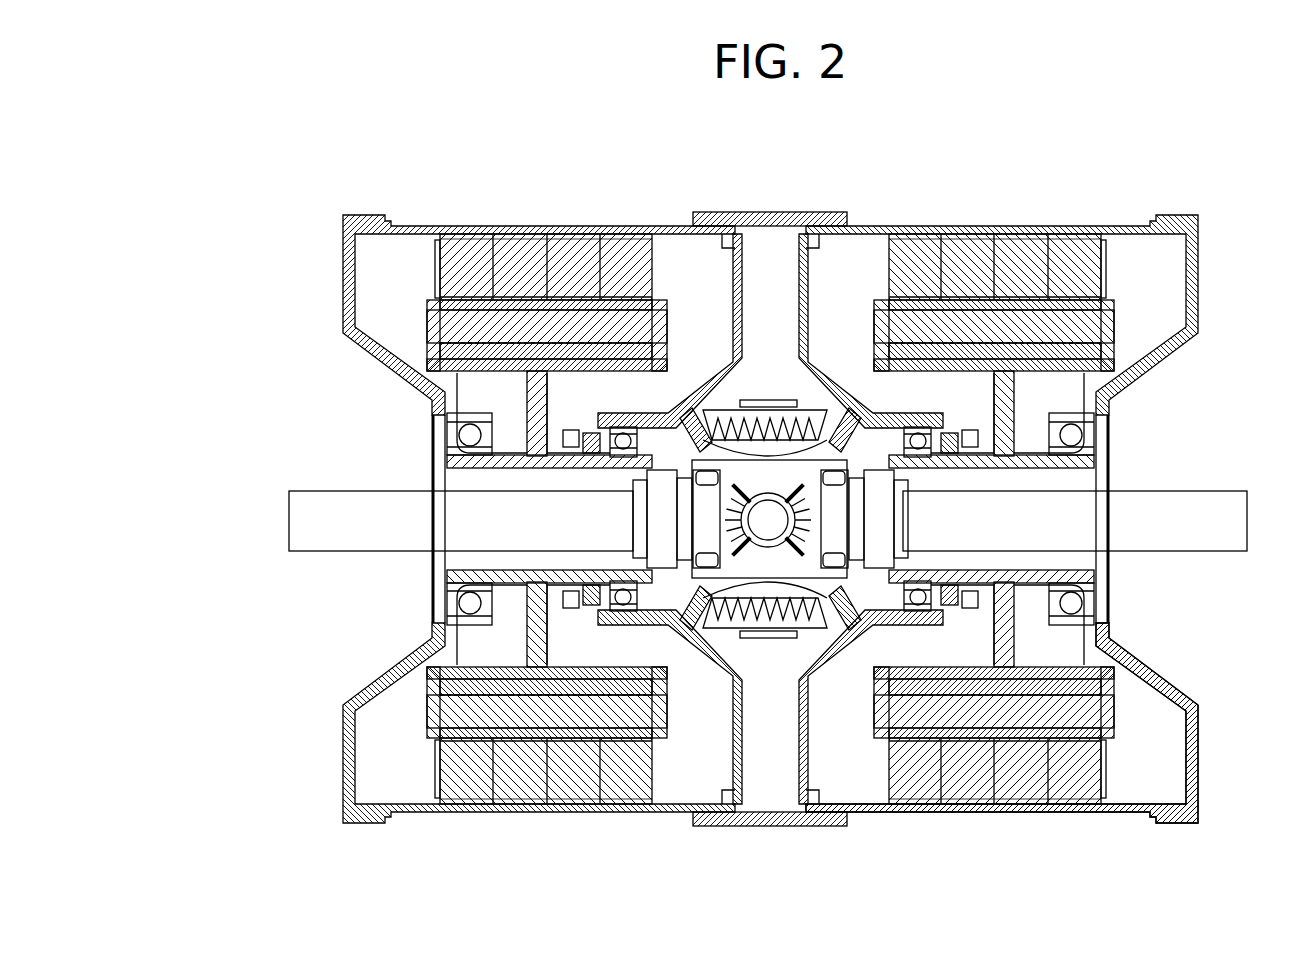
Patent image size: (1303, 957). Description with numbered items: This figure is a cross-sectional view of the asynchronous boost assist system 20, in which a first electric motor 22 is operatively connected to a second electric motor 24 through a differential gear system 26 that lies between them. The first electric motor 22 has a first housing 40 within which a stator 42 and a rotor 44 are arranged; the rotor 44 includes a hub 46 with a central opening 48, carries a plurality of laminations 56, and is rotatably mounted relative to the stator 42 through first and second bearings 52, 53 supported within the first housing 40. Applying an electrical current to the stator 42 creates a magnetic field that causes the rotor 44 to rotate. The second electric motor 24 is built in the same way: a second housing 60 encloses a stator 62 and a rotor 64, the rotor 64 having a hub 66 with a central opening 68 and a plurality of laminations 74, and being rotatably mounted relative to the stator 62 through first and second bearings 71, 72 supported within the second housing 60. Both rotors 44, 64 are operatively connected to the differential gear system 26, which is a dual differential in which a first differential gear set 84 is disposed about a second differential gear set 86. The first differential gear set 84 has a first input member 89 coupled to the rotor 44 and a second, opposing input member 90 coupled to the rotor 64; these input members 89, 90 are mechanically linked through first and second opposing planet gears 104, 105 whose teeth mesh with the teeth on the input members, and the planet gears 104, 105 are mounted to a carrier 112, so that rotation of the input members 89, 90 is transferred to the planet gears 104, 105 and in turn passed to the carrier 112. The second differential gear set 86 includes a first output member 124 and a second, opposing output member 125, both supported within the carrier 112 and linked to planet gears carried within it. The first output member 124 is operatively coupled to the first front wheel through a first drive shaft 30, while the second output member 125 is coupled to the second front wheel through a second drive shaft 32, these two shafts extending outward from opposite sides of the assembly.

The asynchronous boost assist system 20 is at (268, 229).
The first electric motor 22 is at (417, 216).
The second electric motor 24 is at (1182, 184).
The differential gear system 26 is at (777, 189).
The first drive shaft 30 is at (306, 555).
The second drive shaft 32 is at (1228, 555).
The first housing 40 is at (565, 226).
The stator 42 is at (520, 238).
The rotor 44 is at (490, 391).
The hub 46 is at (440, 652).
The central opening 48 is at (455, 470).
The first bearing 52 is at (462, 433).
The second bearing 53 is at (605, 596).
The laminations 56 is at (455, 320).
The second housing 60 is at (993, 224).
The stator 62 is at (1085, 262).
The rotor 64 is at (1040, 386).
The hub 66 is at (1090, 645).
The central opening 68 is at (1063, 470).
The first bearing 71 is at (1072, 605).
The second bearing 72 is at (940, 598).
The laminations 74 is at (1055, 705).
The first differential gear set 84 is at (770, 393).
The second differential gear set 86 is at (712, 518).
The first input member 89 is at (635, 566).
The second input member 90 is at (905, 566).
The first planet gear 104 is at (777, 393).
The second planet gear 105 is at (768, 648).
The carrier 112 is at (710, 450).
The first output member 124 is at (647, 491).
The second output member 125 is at (893, 491).